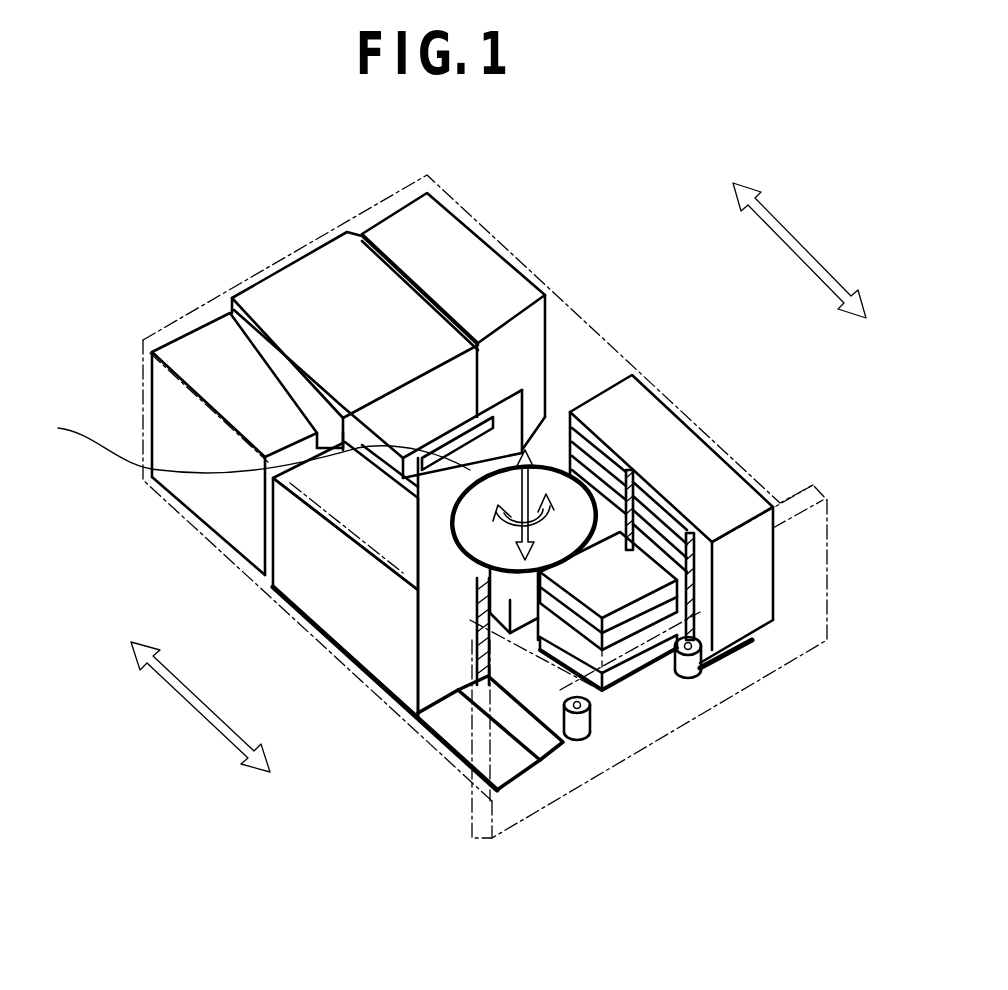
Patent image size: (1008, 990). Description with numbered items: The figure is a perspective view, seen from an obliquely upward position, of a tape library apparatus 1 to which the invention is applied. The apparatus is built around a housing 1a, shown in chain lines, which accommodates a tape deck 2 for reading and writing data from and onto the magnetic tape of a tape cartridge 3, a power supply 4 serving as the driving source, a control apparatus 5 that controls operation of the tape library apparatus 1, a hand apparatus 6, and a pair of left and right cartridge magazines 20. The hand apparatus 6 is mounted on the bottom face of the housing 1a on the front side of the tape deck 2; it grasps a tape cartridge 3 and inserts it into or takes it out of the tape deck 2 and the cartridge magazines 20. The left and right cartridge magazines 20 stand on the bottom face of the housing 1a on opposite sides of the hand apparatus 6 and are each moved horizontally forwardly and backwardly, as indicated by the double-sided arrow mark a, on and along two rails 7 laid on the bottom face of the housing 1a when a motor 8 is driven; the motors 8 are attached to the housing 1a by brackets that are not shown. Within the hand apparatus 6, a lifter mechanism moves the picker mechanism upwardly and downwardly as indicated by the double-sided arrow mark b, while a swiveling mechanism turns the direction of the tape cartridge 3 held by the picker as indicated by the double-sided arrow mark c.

The tape library apparatus 1 is at (828, 576).
The housing 1a is at (528, 264).
The tape deck 2 is at (307, 277).
The tape cartridge 3 is at (668, 512).
The power supply 4 is at (447, 227).
The control apparatus 5 is at (190, 350).
The hand apparatus 6 is at (565, 488).
The rails 7 is at (463, 757).
The motor 8 is at (588, 738).
The cartridge magazines 20 is at (675, 435).
The double-sided arrow mark a is at (838, 274).
The double-sided arrow mark b is at (251, 440).
The double-sided arrow mark c is at (487, 507).